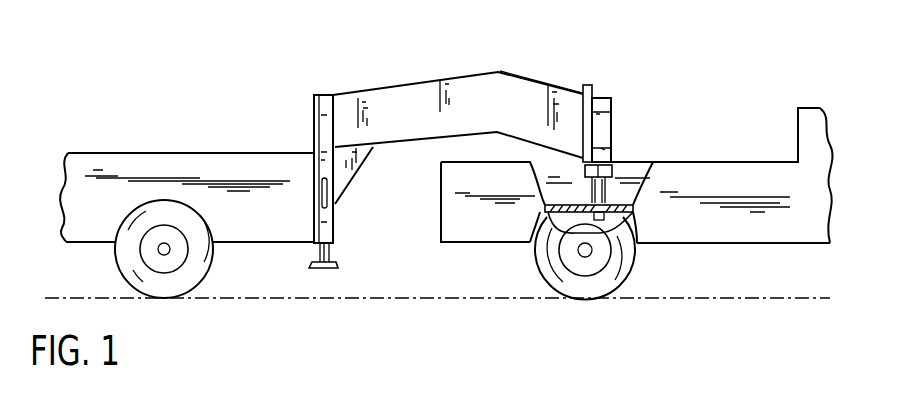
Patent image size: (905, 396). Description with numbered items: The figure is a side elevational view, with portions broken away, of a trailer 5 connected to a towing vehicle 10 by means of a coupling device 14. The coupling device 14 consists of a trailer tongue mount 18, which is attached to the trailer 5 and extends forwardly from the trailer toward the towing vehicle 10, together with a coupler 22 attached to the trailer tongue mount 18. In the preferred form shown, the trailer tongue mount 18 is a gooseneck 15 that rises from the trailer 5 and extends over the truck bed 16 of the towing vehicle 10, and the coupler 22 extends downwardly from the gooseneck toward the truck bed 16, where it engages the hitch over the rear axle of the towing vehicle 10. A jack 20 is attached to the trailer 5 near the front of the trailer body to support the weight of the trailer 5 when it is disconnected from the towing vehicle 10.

The trailer 5 is at (192, 153).
The towing vehicle 10 is at (827, 108).
The coupling device 14 is at (475, 111).
The gooseneck 15 is at (543, 82).
The truck bed 16 is at (630, 197).
The trailer tongue mount 18 is at (507, 100).
The jack 20 is at (335, 227).
The coupler 22 is at (611, 127).